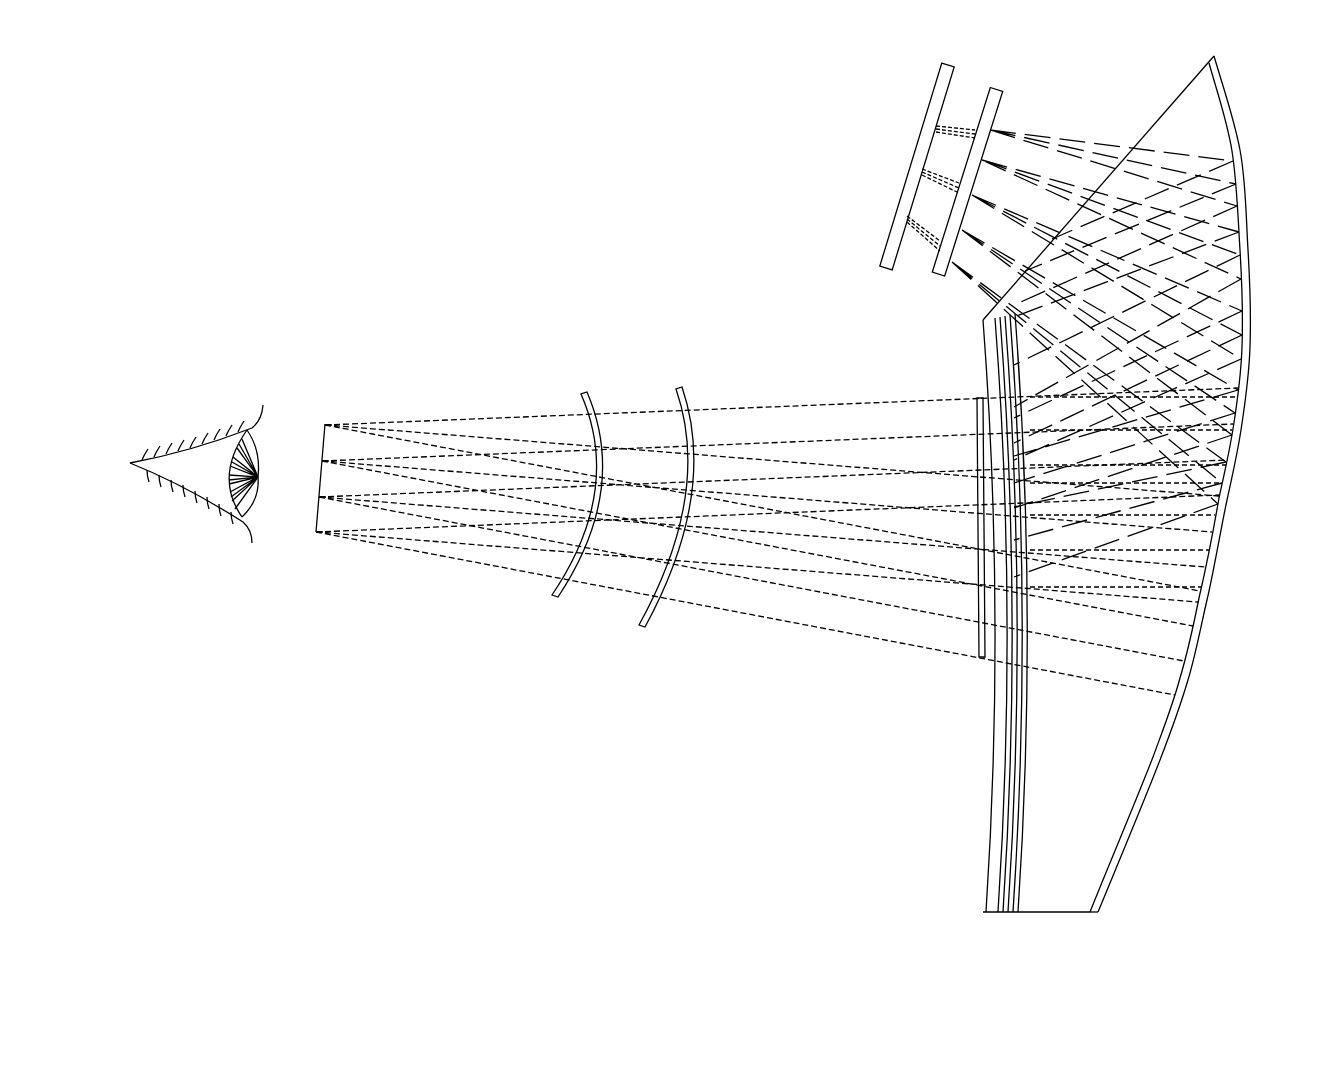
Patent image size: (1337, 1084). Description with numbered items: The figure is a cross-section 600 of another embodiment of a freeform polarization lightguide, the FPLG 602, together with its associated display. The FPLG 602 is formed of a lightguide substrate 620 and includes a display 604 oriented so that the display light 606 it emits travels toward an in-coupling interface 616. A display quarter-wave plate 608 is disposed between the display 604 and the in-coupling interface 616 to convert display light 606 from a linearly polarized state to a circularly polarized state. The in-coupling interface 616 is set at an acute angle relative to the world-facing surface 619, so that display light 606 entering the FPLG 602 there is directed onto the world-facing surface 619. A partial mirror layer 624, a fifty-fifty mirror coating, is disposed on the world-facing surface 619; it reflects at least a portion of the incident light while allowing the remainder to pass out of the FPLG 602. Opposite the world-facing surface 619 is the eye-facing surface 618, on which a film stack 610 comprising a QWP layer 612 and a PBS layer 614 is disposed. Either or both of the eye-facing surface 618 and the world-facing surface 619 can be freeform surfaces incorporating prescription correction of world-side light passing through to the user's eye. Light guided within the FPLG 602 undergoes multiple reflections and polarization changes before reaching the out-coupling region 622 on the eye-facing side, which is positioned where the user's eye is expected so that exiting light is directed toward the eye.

The cross-section 600 is at (527, 97).
The FPLG 602 is at (890, 97).
The display 604 is at (885, 268).
The display light 606 is at (1010, 193).
The display quarter-wave plate 608 is at (1003, 88).
The film stack 610 is at (980, 917).
The QWP layer 612 is at (1010, 877).
The PBS layer 614 is at (987, 877).
The in-coupling interface 616 is at (1160, 117).
The eye-facing surface 618 is at (1027, 683).
The world-facing surface 619 is at (1236, 130).
The lightguide substrate 620 is at (1060, 805).
The out-coupling region 622 is at (977, 640).
The partial mirror layer 624 is at (1240, 433).